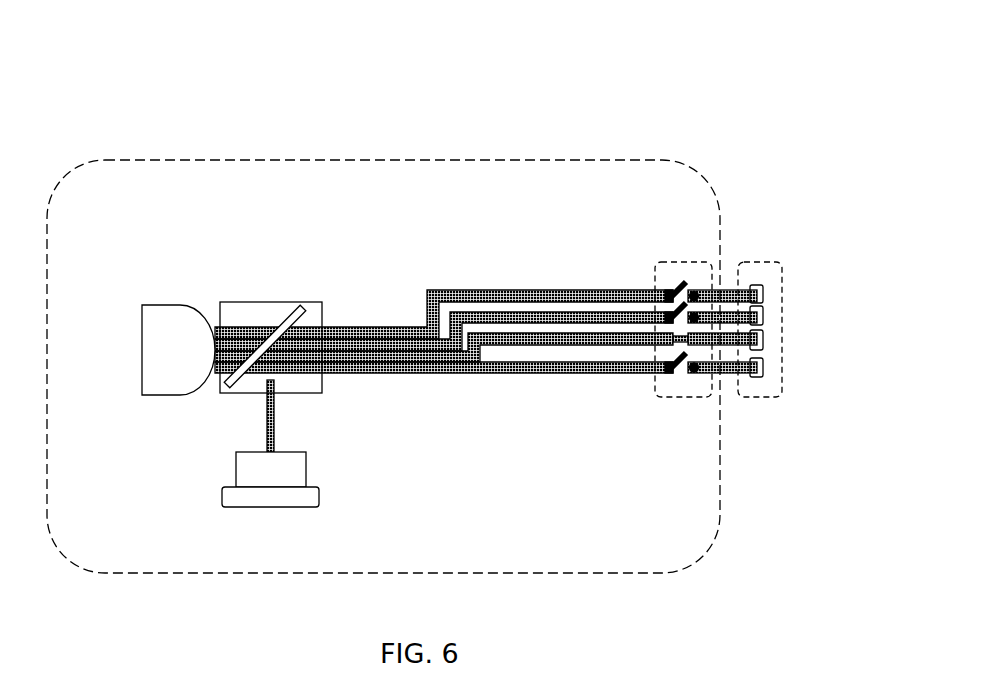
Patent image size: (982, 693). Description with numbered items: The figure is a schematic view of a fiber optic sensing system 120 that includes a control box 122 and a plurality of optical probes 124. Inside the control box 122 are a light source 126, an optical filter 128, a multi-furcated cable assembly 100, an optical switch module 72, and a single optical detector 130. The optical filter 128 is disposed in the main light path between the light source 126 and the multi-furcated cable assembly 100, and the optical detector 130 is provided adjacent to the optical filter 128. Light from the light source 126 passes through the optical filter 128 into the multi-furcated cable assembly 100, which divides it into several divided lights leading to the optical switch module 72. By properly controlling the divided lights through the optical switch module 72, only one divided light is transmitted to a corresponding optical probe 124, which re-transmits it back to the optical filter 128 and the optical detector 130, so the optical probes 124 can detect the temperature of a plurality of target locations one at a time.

The fiber optic sensing system 120 is at (567, 100).
The control box 122 is at (240, 160).
The light source 126 is at (171, 305).
The optical filter 128 is at (271, 292).
The optical detector 130 is at (214, 463).
The multi-furcated cable assembly 100 is at (361, 312).
The optical switch module 72 is at (676, 262).
The optical probes 124 is at (763, 295).